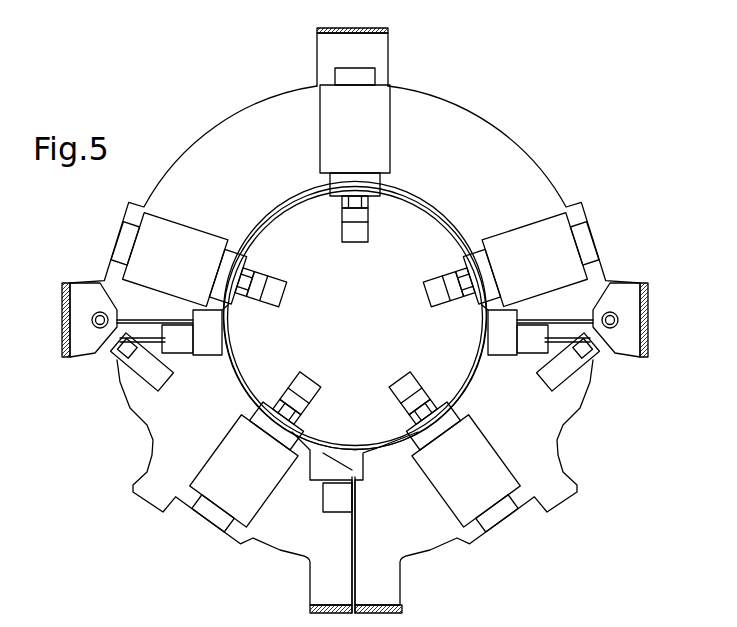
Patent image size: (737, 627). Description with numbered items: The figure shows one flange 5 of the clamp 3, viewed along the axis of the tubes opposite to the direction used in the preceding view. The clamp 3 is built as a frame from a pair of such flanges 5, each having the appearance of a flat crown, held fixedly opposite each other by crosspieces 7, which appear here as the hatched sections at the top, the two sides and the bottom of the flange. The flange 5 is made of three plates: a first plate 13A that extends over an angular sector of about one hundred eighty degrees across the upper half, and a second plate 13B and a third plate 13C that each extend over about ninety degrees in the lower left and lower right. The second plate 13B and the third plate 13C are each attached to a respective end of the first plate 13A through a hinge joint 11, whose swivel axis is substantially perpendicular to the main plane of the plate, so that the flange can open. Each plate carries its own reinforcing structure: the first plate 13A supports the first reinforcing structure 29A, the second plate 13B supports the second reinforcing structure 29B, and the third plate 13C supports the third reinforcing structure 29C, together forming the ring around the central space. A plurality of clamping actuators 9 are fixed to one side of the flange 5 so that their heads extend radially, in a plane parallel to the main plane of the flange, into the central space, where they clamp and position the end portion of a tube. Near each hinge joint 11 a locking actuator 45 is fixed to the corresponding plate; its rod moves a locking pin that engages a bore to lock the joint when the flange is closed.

The clamp 3 is at (128, 533).
The flange 5 is at (243, 100).
The crosspiece 7 is at (340, 27).
The clamping actuator 9 is at (375, 110).
The hinge joint 11 is at (72, 363).
The first plate 13A is at (482, 135).
The second plate 13B is at (157, 432).
The third plate 13C is at (416, 540).
The first reinforcing structure 29A is at (407, 200).
The second reinforcing structure 29B is at (238, 387).
The third reinforcing structure 29C is at (465, 390).
The locking actuator 45 is at (182, 343).